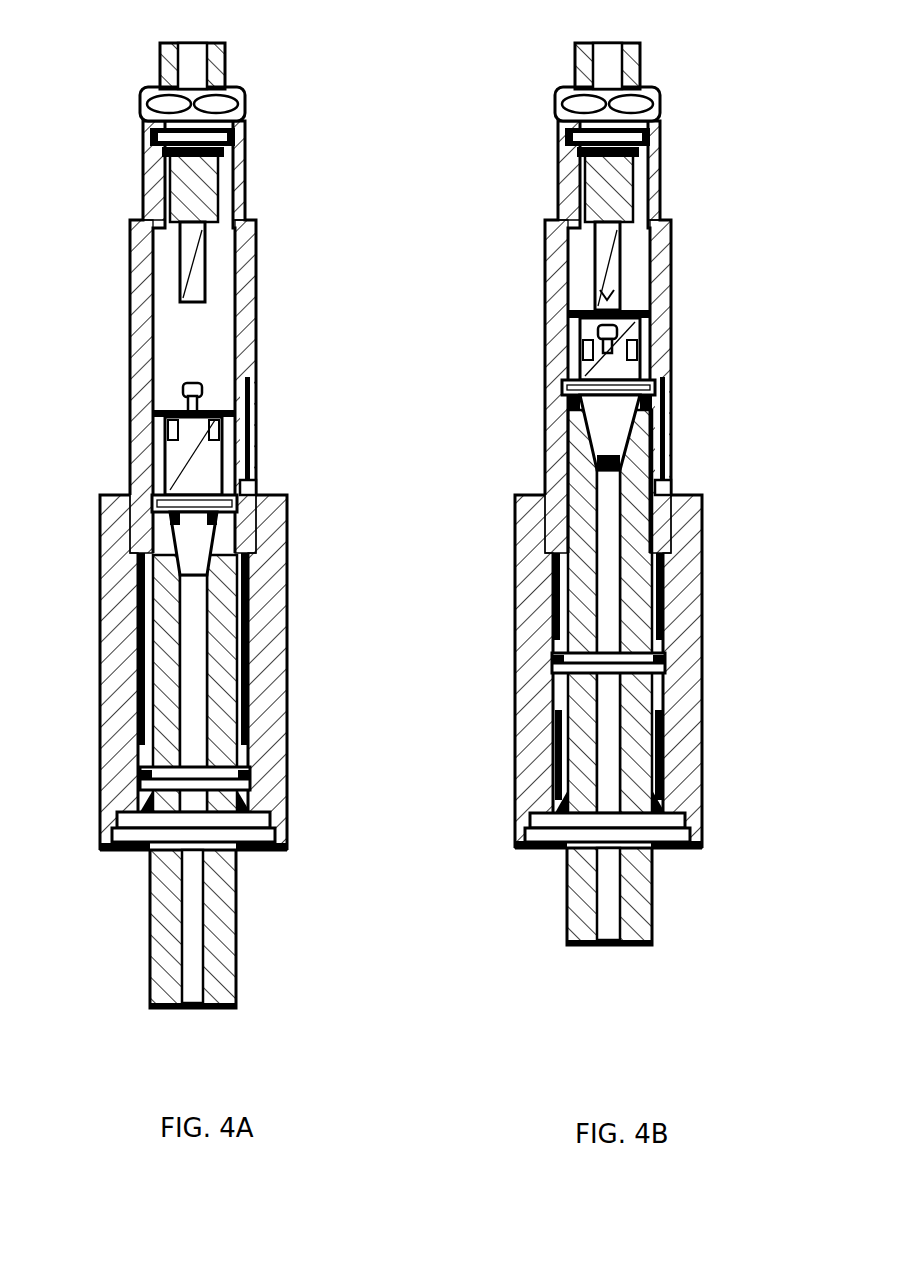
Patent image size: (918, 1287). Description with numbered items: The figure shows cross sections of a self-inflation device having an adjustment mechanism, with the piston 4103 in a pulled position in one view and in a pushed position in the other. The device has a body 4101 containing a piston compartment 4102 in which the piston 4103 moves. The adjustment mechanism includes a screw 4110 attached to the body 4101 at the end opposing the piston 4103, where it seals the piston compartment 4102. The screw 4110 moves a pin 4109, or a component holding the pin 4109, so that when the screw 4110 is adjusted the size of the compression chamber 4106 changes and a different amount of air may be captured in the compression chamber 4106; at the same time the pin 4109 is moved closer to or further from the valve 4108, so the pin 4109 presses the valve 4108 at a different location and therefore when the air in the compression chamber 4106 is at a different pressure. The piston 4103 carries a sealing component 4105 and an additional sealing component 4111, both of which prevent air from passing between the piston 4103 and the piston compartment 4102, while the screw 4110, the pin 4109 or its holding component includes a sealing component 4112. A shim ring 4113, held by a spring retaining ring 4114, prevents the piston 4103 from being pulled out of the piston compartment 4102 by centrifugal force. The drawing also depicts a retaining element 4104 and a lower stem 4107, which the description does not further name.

In FIG. 4A, the body 4101 is at (263, 540).
In FIG. 4B, the body 4101 is at (555, 535).
In FIG. 4A, the piston compartment 4102 is at (240, 365).
In FIG. 4B, the piston compartment 4102 is at (565, 355).
In FIG. 4A, the piston 4103 is at (215, 670).
In FIG. 4B, the piston 4103 is at (582, 690).
In FIG. 4A, the retaining clip 4104 is at (255, 480).
In FIG. 4B, the retaining clip 4104 is at (673, 478).
In FIG. 4A, the sealing component 4105 is at (160, 498).
In FIG. 4B, the sealing component 4105 is at (623, 386).
In FIG. 4B, the compression chamber 4106 is at (606, 232).
In FIG. 4A, the lower stem 4107 is at (190, 895).
In FIG. 4B, the lower stem 4107 is at (610, 880).
In FIG. 4A, the valve 4108 is at (190, 462).
In FIG. 4B, the valve 4108 is at (618, 360).
In FIG. 4A, the pin 4109 is at (205, 268).
In FIG. 4B, the pin 4109 is at (425, 208).
In FIG. 4A, the screw 4110 is at (160, 68).
In FIG. 4B, the screw 4110 is at (645, 68).
In FIG. 4A, the additional sealing component 4111 is at (150, 775).
In FIG. 4B, the additional sealing component 4111 is at (645, 664).
In FIG. 4A, the sealing component 4112 is at (162, 135).
In FIG. 4B, the sealing component 4112 is at (623, 142).
In FIG. 4B, the shim ring 4113 is at (645, 820).
In FIG. 4B, the spring retaining ring 4114 is at (652, 835).